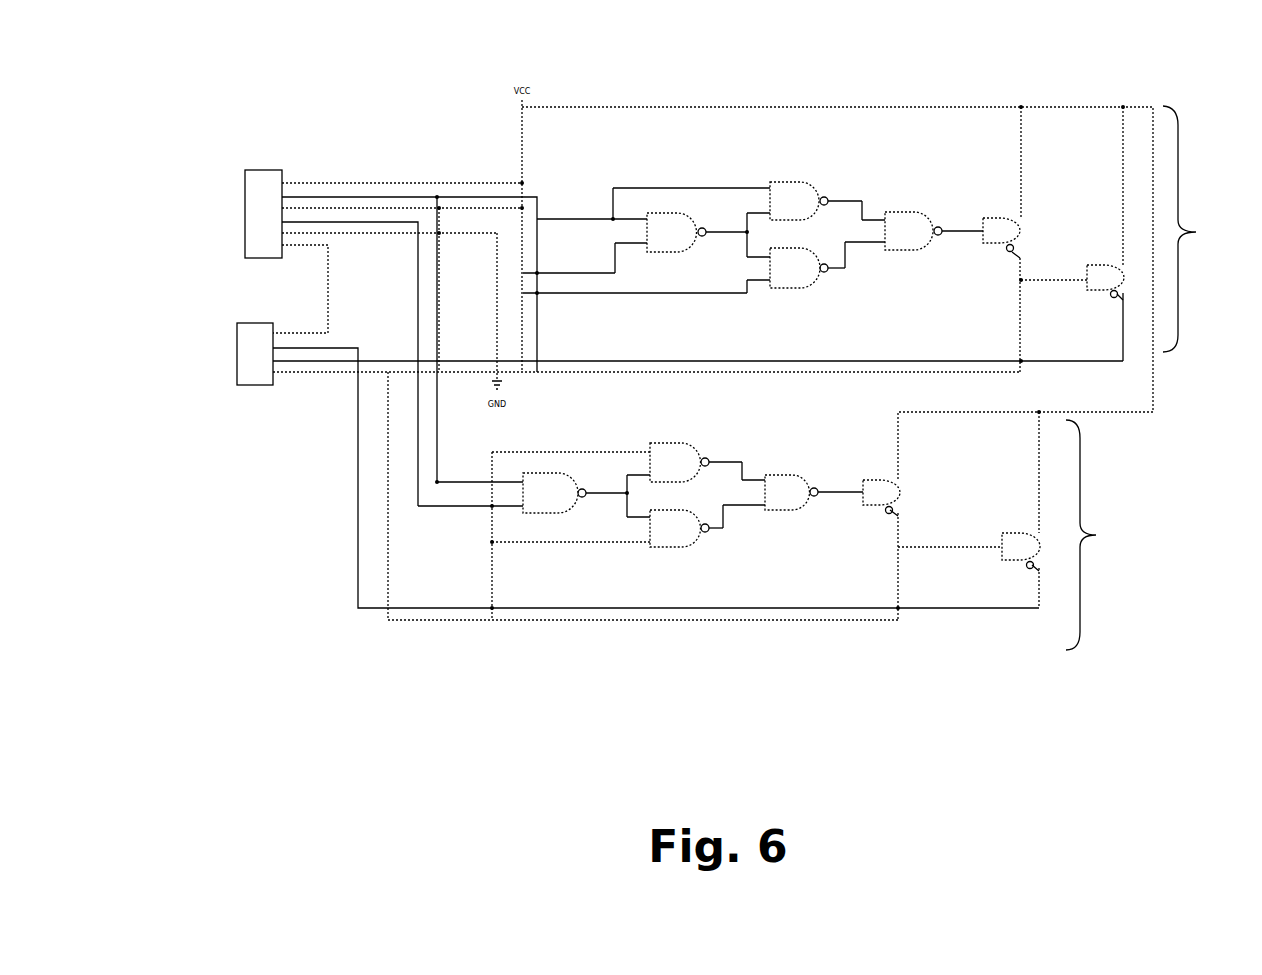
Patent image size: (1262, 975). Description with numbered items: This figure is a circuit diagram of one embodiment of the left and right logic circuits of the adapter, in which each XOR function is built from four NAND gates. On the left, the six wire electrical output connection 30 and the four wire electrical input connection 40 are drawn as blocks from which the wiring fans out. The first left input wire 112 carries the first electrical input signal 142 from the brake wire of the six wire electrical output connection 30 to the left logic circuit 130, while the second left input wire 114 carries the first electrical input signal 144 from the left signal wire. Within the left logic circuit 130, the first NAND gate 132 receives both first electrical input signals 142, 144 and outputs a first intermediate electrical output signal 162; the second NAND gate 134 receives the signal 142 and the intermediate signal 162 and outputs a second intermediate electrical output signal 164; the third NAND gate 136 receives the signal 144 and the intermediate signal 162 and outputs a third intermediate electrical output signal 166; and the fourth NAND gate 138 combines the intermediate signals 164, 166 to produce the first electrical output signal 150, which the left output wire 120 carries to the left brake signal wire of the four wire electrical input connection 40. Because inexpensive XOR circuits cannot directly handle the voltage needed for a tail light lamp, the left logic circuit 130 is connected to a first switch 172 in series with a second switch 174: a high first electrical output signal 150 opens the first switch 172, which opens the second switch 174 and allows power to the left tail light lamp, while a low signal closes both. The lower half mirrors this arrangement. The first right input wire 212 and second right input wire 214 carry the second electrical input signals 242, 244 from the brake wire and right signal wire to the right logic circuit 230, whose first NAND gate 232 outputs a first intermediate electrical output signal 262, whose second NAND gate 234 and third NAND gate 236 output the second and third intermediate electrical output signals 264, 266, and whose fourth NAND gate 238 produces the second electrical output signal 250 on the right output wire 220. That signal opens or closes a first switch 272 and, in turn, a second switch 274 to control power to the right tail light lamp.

The six wire electrical output connection 30 is at (243, 172).
The four wire electrical input connection 40 is at (236, 330).
The first left input wire 112 is at (480, 195).
The second left input wire 114 is at (366, 207).
The left output wire 120 is at (348, 352).
The left logic circuit 130 is at (1210, 229).
The first NAND gate 132 is at (672, 212).
The second NAND gate 134 is at (797, 181).
The third NAND gate 136 is at (800, 290).
The fourth NAND gate 138 is at (903, 211).
The first electrical input signal 142 is at (564, 218).
The first electrical input signal 144 is at (600, 275).
The first electrical output signal 150 is at (967, 230).
The first intermediate electrical output signal 162 is at (730, 230).
The second intermediate electrical output signal 164 is at (852, 193).
The third intermediate electrical output signal 166 is at (846, 252).
The first switch 172 is at (1021, 216).
The second switch 174 is at (1125, 262).
The first right input wire 212 is at (436, 428).
The second right input wire 214 is at (391, 221).
The right output wire 220 is at (330, 335).
The right logic circuit 230 is at (1106, 535).
The first NAND gate 232 is at (548, 514).
The second NAND gate 234 is at (673, 442).
The third NAND gate 236 is at (675, 548).
The fourth NAND gate 238 is at (790, 511).
The second electrical input signal 242 is at (620, 451).
The second electrical input signal 244 is at (478, 507).
The second electrical output signal 250 is at (845, 493).
The first intermediate electrical output signal 262 is at (602, 495).
The second intermediate electrical output signal 264 is at (729, 461).
The third intermediate electrical output signal 266 is at (738, 507).
The first switch 272 is at (895, 479).
The second switch 274 is at (1039, 532).